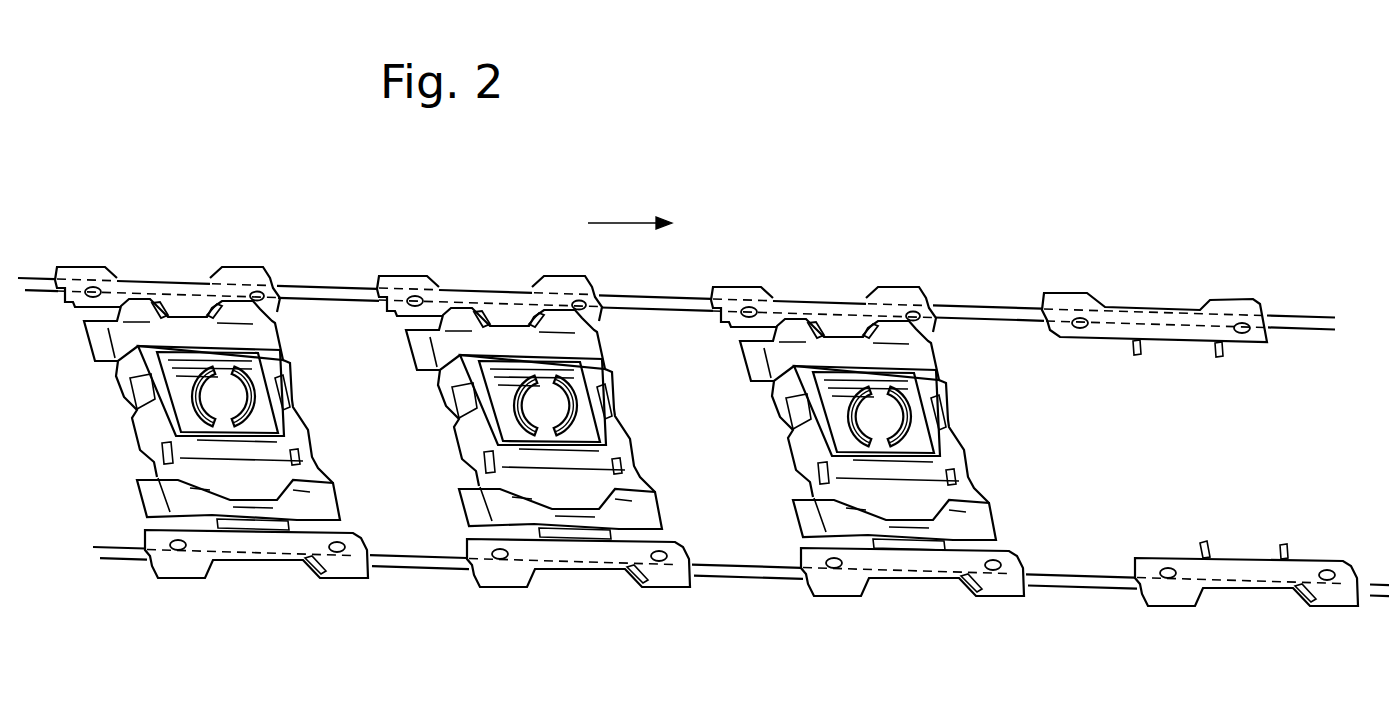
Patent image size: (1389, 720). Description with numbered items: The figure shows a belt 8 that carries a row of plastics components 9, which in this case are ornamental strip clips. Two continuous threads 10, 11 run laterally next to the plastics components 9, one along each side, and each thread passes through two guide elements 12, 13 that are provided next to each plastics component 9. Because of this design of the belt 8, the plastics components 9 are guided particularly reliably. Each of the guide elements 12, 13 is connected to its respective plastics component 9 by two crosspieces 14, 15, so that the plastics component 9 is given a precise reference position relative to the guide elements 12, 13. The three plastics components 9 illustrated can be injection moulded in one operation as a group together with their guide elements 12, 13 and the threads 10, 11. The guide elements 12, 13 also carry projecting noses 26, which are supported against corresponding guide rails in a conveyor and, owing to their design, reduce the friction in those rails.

The belt 8 is at (990, 282).
The plastics component 9 is at (963, 452).
The continuous thread 10 is at (668, 300).
The continuous thread 11 is at (740, 573).
The guide element 12 is at (890, 293).
The guide element 13 is at (993, 598).
The crosspiece 14 is at (1137, 352).
The crosspiece 15 is at (1282, 548).
The projecting nose 26 is at (92, 268).